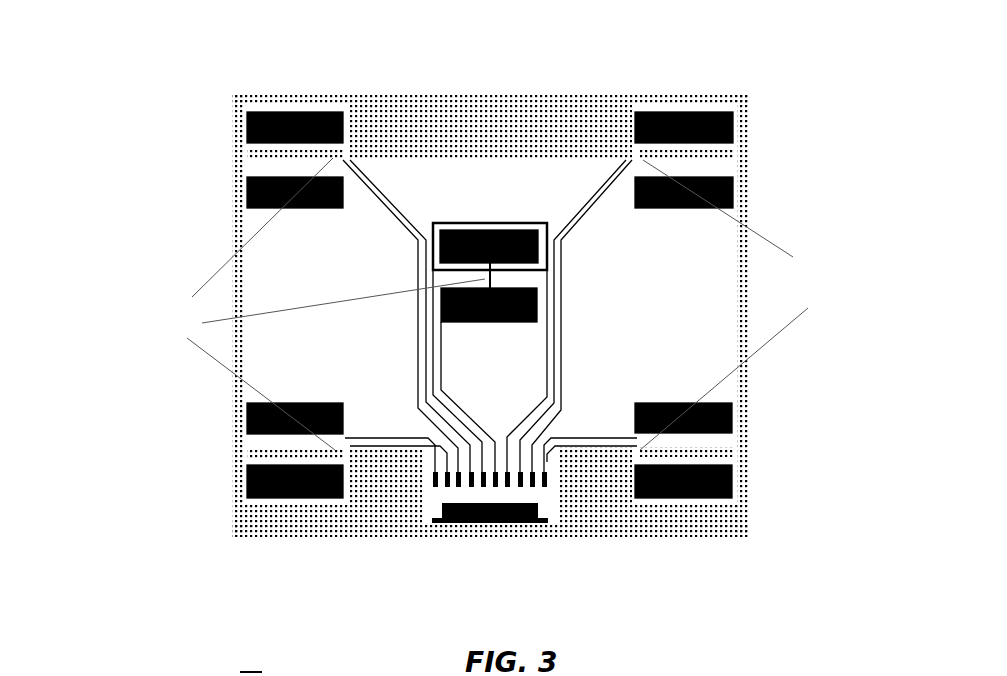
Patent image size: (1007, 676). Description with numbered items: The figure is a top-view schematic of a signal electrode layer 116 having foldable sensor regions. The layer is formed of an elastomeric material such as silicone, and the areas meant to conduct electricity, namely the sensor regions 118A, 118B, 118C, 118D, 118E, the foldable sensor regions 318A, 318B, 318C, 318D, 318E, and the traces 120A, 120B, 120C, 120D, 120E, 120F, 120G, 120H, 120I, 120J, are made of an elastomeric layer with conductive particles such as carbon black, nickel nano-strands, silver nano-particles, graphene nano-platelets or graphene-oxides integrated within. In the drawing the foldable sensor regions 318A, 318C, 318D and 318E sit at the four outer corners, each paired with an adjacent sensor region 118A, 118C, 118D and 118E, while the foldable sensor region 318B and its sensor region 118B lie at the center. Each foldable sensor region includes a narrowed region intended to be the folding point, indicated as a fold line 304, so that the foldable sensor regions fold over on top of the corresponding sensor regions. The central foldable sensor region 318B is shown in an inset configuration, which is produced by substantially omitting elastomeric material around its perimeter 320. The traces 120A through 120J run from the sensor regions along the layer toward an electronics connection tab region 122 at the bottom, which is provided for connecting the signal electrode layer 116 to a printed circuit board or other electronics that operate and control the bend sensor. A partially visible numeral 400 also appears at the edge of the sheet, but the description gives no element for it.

The signal electrode layer 116 is at (146, 43).
The foldable sensor region 318A is at (313, 112).
The sensor region 118A is at (247, 200).
The foldable sensor region 318C is at (703, 123).
The sensor region 118C is at (718, 185).
The sensor region 118E is at (247, 408).
The foldable sensor region 318E is at (250, 500).
The sensor region 118D is at (735, 420).
The foldable sensor region 318D is at (652, 497).
The perimeter 320 is at (447, 222).
The foldable sensor region 318B is at (497, 238).
The sensor region 118B is at (452, 323).
The trace 120A is at (369, 174).
The trace 120B is at (367, 213).
The trace 120C is at (428, 373).
The trace 120D is at (453, 357).
The trace 120E is at (605, 174).
The trace 120F is at (605, 213).
The trace 120G is at (581, 451).
The trace 120H is at (583, 428).
The trace 120I is at (373, 451).
The trace 120J is at (387, 429).
The electronics connection tab region 122 is at (490, 493).
The fold line 304 is at (492, 304).
The partial view 400 is at (226, 670).